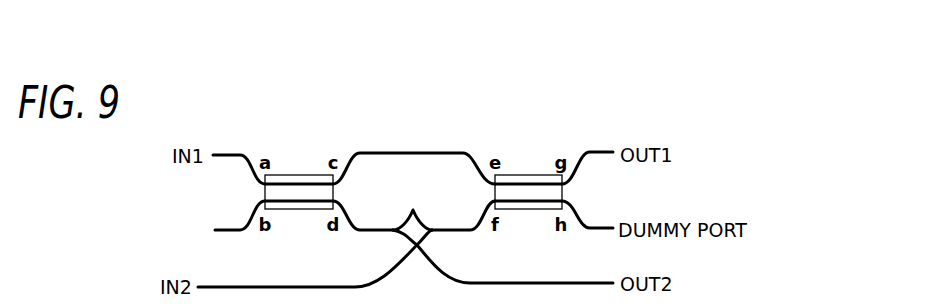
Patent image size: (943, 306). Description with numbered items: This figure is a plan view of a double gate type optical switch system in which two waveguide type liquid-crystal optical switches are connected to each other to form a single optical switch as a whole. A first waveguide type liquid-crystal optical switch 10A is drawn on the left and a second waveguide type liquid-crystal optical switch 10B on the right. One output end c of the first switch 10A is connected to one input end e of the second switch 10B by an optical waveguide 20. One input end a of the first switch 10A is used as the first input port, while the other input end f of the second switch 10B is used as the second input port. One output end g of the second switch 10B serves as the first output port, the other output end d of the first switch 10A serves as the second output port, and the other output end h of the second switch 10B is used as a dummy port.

The first waveguide type liquid-crystal optical switch 10A is at (291, 190).
The second waveguide type liquid-crystal optical switch 10B is at (520, 190).
The optical waveguide 20 is at (405, 153).